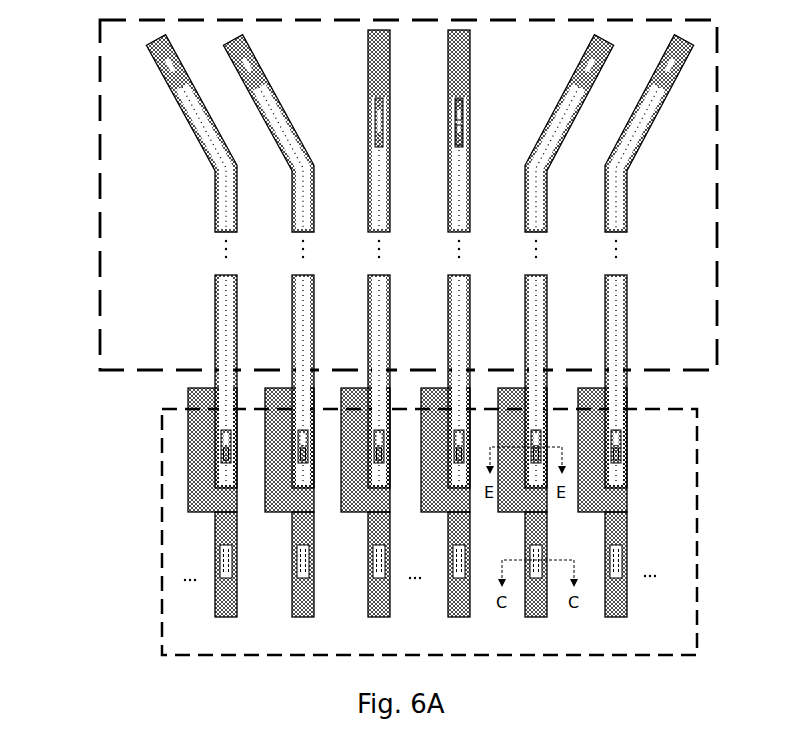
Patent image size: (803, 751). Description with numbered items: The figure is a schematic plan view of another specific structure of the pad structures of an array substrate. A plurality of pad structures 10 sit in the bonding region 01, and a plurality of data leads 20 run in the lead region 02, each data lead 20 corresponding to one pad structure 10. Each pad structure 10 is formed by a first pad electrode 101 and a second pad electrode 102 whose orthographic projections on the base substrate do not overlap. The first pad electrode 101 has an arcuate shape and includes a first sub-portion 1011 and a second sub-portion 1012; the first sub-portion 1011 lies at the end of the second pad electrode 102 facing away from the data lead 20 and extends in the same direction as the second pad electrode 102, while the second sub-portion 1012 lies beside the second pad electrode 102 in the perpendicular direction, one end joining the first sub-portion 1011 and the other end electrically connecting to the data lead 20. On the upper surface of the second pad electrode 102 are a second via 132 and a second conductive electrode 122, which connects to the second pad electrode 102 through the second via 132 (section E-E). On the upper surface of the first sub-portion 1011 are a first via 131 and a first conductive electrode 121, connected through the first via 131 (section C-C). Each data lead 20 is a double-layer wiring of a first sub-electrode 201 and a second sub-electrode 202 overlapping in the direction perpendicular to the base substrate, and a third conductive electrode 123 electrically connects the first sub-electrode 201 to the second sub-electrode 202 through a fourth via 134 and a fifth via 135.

The bonding region 01 is at (680, 527).
The lead region 02 is at (690, 233).
The pad structure 10 is at (356, 446).
The first pad electrode 101 is at (343, 502).
The first sub-portion 1011 is at (218, 529).
The second sub-portion 1012 is at (193, 471).
The second pad electrode 102 is at (382, 381).
The first conductive electrode 121 is at (421, 550).
The first via 131 is at (226, 565).
The second conductive electrode 122 is at (456, 447).
The second via 132 is at (622, 452).
The third conductive electrode 123 is at (458, 123).
The fourth via 134 is at (464, 108).
The fifth via 135 is at (464, 135).
The data lead 20 is at (401, 131).
The first sub-electrode 201 is at (380, 61).
The second sub-electrode 202 is at (383, 190).